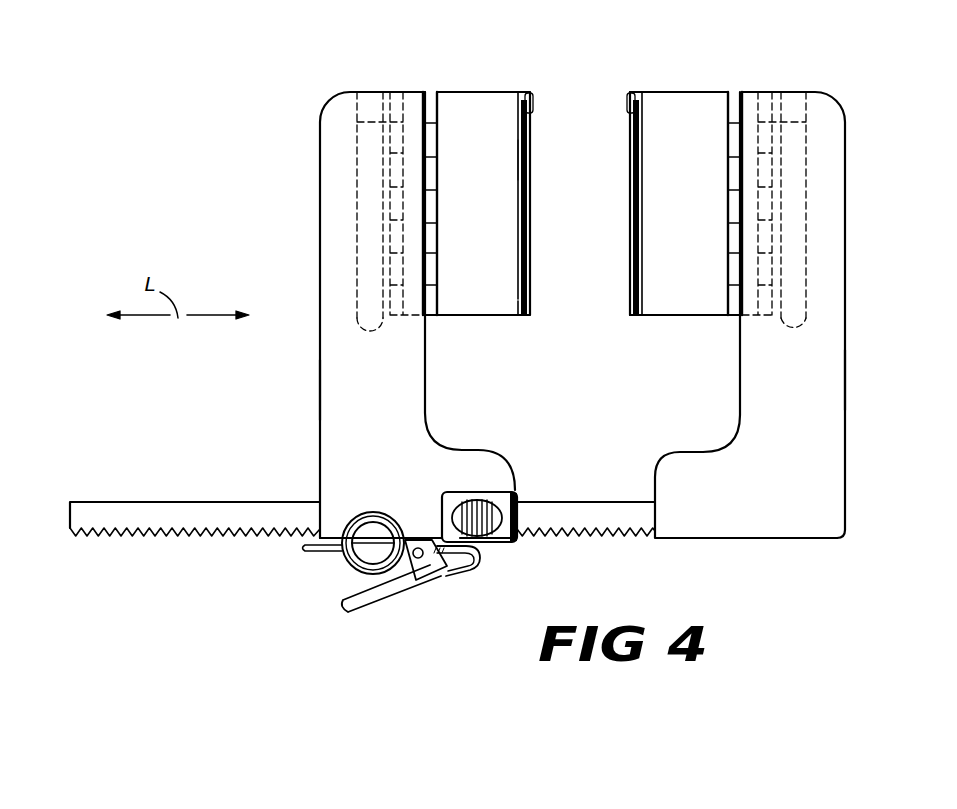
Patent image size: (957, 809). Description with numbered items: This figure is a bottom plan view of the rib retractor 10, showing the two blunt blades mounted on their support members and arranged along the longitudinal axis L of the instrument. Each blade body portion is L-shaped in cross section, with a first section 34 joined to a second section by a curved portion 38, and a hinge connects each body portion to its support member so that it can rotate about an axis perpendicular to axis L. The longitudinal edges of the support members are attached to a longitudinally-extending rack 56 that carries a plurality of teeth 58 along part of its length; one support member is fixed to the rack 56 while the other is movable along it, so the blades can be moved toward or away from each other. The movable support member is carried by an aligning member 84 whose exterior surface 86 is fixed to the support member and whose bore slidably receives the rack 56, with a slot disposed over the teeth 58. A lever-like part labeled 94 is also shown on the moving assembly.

The rib retractor 10 is at (400, 50).
The first section 34 is at (500, 168).
The curved portion 38 is at (529, 216).
The rack 56 is at (268, 540).
The teeth 58 is at (195, 540).
The aligning member 84 is at (502, 484).
The exterior surface 86 is at (470, 500).
The locking lever 94 is at (492, 550).